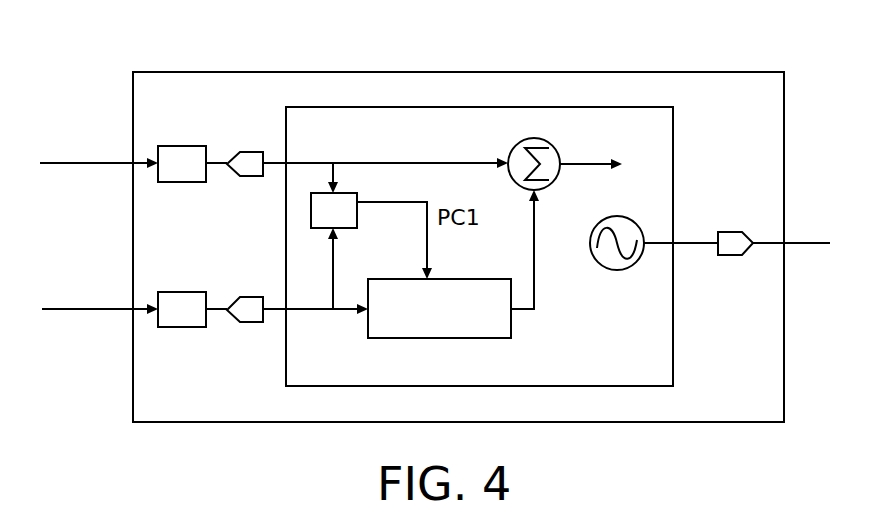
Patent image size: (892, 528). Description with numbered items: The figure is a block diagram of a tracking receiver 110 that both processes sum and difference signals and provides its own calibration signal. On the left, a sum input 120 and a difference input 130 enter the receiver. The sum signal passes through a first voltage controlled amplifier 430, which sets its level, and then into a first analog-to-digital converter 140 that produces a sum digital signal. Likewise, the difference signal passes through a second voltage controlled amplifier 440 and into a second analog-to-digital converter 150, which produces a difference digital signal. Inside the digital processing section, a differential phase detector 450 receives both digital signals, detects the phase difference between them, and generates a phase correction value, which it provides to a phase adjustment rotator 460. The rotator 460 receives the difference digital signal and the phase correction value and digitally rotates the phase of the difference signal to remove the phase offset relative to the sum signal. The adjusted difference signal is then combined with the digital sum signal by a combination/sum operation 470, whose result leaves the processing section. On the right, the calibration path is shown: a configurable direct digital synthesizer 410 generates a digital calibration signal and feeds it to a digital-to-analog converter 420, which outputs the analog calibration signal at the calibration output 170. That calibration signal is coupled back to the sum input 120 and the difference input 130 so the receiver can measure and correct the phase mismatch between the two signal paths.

The tracking receiver 110 is at (533, 72).
The sum input 120 is at (97, 164).
The difference input 130 is at (97, 310).
The first analog-to-digital converter 140 is at (248, 152).
The second analog-to-digital converter 150 is at (255, 322).
The calibration output 170 is at (803, 244).
The direct digital synthesizer 410 is at (617, 270).
The digital-to-analog converter 420 is at (728, 255).
The voltage controlled amplifier 430 is at (188, 146).
The voltage controlled amplifier 440 is at (183, 327).
The differential phase detector 450 is at (311, 208).
The phase adjustment rotator 460 is at (416, 338).
The combination/sum operation 470 is at (514, 142).